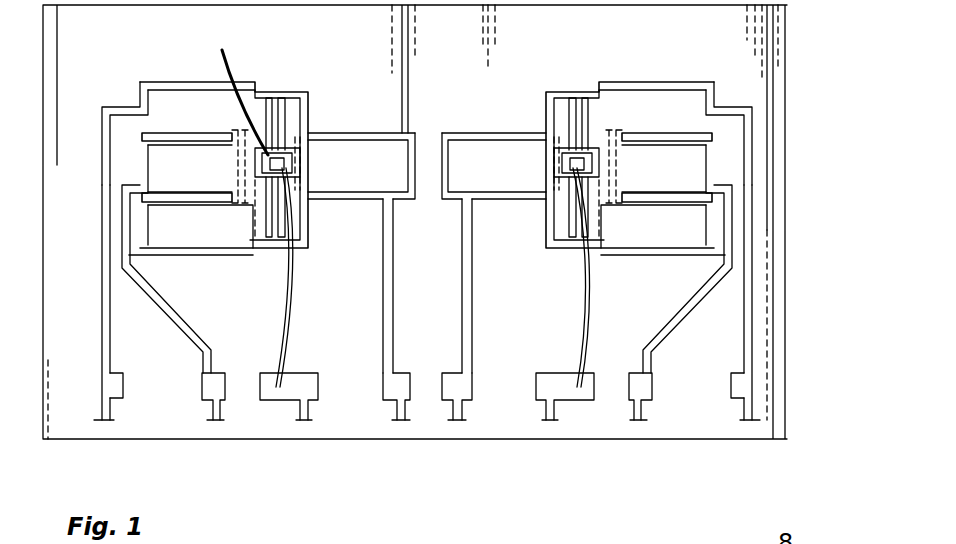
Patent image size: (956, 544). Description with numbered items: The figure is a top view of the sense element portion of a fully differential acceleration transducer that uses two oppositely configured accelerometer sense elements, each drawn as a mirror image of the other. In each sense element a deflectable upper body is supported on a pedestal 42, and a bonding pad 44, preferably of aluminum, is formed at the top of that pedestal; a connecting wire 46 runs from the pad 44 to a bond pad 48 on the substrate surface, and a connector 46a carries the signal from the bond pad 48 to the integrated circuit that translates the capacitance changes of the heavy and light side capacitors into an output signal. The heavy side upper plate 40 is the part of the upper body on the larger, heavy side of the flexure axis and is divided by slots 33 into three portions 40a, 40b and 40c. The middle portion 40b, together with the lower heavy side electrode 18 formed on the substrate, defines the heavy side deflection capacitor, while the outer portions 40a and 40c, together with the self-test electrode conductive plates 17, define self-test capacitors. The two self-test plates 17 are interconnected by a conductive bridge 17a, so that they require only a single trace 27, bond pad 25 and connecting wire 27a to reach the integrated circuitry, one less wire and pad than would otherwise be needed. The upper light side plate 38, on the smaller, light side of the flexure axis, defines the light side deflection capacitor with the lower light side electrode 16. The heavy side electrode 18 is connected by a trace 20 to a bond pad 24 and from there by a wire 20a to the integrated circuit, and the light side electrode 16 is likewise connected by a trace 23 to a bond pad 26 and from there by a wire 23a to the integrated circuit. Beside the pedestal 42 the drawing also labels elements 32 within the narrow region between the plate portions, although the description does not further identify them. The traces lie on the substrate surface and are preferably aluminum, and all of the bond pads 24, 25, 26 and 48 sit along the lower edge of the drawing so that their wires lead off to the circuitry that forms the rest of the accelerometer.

The lower light side electrode 16 is at (463, 135).
The self-test electrode conductive plates 17 is at (208, 88).
The conductive bridge 17a is at (258, 256).
The lower heavy side electrode 18 is at (147, 175).
The trace 20 is at (168, 306).
The wire 20a is at (220, 410).
The trace 23 is at (466, 228).
The wire 23a is at (462, 412).
The bond pad 24 is at (207, 383).
The bond pad 25 is at (114, 384).
The bond pad 26 is at (457, 372).
The trace 27 is at (102, 320).
The connecting wire 27a is at (110, 410).
The contact 32 is at (272, 97).
The slots 33 is at (148, 137).
The upper light side plate 38 is at (480, 133).
The heavy side upper plate 40 is at (186, 82).
The portion of heavy side upper plate 40a is at (162, 98).
The portion of heavy side upper plate 40b is at (162, 162).
The portion of heavy side upper plate 40c is at (165, 233).
The supporting pedestal 42 is at (290, 160).
The bonding pad 44 is at (567, 147).
The connecting wire 46 is at (298, 162).
The connector 46a is at (307, 413).
The bond pad 48 is at (303, 375).